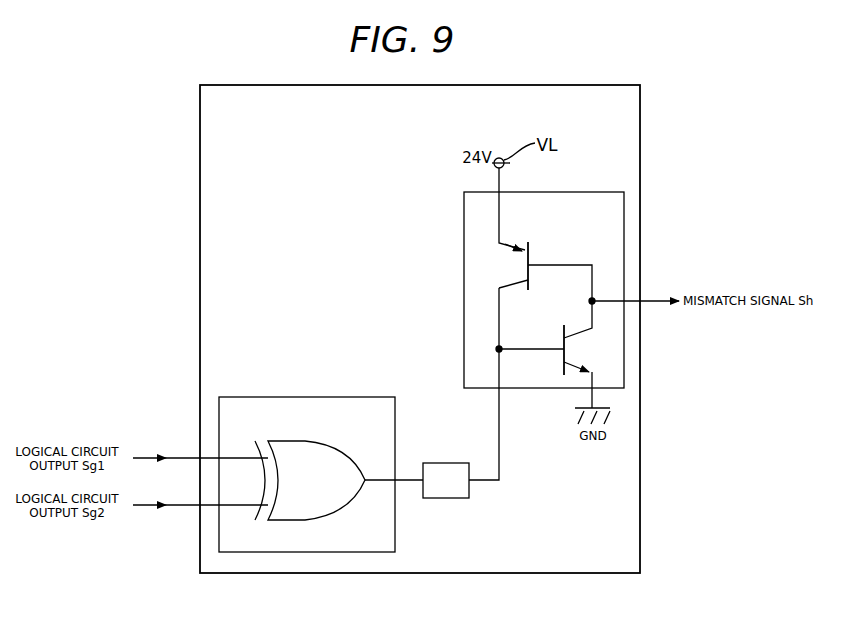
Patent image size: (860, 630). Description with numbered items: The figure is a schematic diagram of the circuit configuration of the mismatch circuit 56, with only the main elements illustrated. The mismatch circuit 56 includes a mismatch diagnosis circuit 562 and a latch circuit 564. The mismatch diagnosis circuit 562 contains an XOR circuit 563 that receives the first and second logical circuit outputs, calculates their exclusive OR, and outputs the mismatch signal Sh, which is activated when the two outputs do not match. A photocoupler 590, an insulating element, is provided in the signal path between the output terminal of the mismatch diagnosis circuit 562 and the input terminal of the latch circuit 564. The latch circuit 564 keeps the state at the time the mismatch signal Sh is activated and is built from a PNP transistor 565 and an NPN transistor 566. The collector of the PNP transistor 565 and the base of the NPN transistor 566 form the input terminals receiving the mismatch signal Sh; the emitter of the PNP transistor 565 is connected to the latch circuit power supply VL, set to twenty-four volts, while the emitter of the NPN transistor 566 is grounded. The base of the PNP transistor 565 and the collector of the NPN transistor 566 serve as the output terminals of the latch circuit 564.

The mismatch circuit 56 is at (640, 119).
The mismatch diagnosis circuit 562 is at (305, 397).
The XOR circuit 563 is at (327, 515).
The latch circuit 564 is at (464, 276).
The PNP transistor 565 is at (512, 262).
The NPN transistor 566 is at (583, 348).
The photocoupler 590 is at (446, 463).